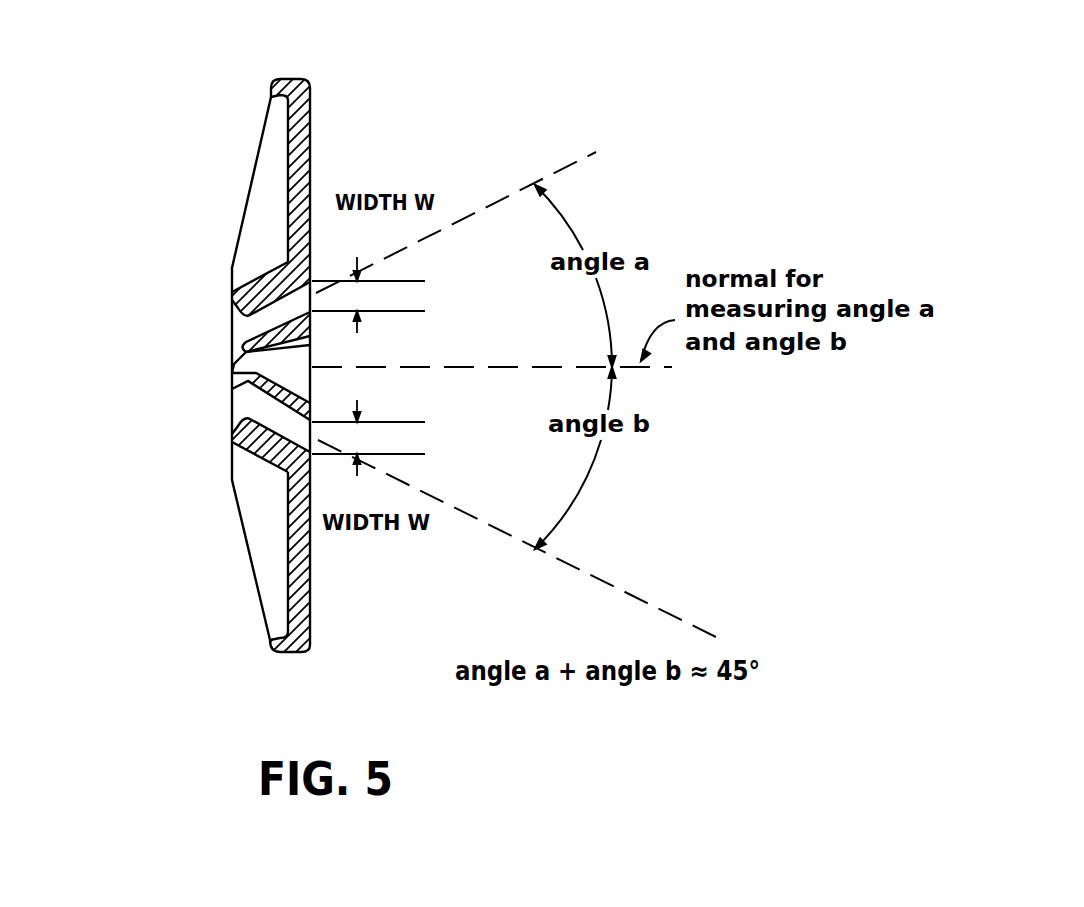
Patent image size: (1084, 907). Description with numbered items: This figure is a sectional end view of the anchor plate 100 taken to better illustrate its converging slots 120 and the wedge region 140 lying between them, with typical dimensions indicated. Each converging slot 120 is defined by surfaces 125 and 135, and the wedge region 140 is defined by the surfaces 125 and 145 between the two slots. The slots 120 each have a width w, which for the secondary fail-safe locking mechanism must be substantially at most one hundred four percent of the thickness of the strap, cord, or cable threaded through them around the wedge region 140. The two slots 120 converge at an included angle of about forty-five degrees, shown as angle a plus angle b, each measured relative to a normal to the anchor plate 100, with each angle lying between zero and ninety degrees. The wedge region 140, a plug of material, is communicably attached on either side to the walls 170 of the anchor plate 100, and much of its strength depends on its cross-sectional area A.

The anchor plate 100 is at (330, 78).
The walls 170 is at (265, 207).
The surface 135 is at (236, 324).
The surface 125 is at (233, 333).
The wedge region 140 is at (233, 378).
The cross-sectional area A is at (233, 360).
The surface 145 is at (314, 364).
The converging slots 120 is at (316, 299).